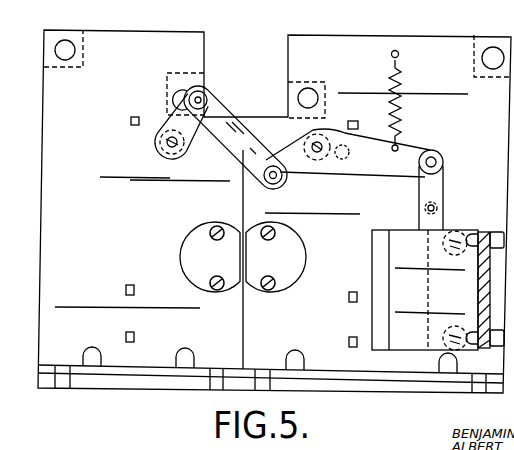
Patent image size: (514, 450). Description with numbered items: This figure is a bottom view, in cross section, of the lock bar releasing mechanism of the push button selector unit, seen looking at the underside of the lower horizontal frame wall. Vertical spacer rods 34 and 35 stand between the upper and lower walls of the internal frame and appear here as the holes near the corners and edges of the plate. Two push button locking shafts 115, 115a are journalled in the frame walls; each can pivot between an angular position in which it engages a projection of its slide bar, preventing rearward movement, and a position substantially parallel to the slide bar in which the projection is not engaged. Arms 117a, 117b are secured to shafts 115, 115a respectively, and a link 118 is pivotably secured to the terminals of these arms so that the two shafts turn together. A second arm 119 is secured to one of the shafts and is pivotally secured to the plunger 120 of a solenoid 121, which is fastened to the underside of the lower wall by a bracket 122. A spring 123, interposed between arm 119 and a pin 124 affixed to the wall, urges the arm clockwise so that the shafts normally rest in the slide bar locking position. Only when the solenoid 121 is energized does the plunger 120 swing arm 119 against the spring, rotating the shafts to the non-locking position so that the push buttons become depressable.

The vertical spacer rod 34 is at (84, 48).
The vertical spacer rod 35 is at (179, 80).
The push button locking shaft 115 is at (168, 144).
The push button locking shaft 115a is at (320, 150).
The arm 117a is at (199, 129).
The arm 117b is at (289, 180).
The link 118 is at (215, 116).
The second arm 119 is at (368, 148).
The plunger 120 is at (446, 188).
The solenoid 121 is at (404, 236).
The bracket 122 is at (493, 234).
The spring 123 is at (399, 118).
The pin 124 is at (399, 54).